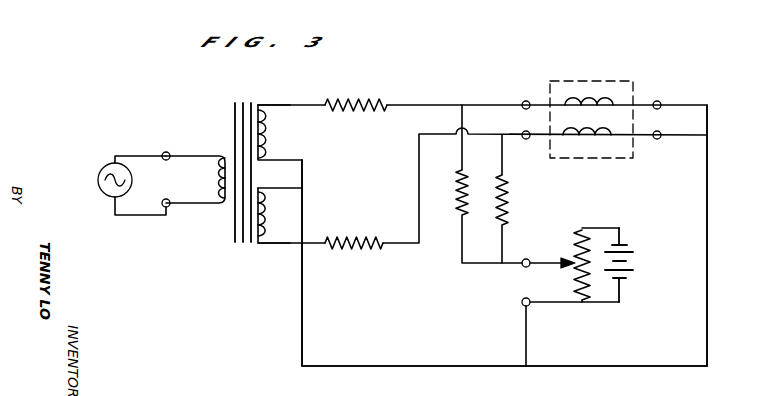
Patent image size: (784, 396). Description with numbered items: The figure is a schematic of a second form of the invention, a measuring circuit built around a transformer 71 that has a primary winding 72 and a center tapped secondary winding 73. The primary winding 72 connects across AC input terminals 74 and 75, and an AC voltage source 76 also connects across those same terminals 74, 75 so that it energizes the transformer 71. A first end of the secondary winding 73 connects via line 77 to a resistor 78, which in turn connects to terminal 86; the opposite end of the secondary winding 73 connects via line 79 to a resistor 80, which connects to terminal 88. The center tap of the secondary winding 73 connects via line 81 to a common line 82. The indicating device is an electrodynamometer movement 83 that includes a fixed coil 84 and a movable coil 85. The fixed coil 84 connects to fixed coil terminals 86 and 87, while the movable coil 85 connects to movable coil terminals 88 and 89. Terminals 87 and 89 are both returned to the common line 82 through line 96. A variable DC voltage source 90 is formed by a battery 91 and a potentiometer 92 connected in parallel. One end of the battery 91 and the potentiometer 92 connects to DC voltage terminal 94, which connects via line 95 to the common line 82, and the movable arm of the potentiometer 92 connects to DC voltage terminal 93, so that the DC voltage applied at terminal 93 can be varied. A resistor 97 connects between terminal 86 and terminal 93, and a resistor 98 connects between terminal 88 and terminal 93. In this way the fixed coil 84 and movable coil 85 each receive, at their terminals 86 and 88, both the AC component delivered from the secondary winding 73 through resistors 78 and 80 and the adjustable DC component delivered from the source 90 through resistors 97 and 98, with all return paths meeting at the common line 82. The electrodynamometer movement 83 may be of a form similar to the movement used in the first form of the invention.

The transformer 71 is at (234, 104).
The primary winding 72 is at (225, 150).
The center tapped secondary winding 73 is at (264, 104).
The AC input terminal 74 is at (163, 152).
The AC input terminal 75 is at (169, 208).
The AC voltage source 76 is at (98, 172).
The line 77 is at (296, 108).
The resistor 78 is at (366, 99).
The line 79 is at (289, 245).
The resistor 80 is at (354, 240).
The line 81 is at (303, 321).
The common line 82 is at (415, 364).
The electrodynamometer movement 83 is at (628, 78).
The fixed coil 84 is at (581, 98).
The movable coil 85 is at (596, 142).
The fixed coil terminal 86 is at (527, 100).
The fixed coil terminal 87 is at (660, 101).
The movable coil terminal 88 is at (525, 130).
The movable coil terminal 89 is at (657, 139).
The variable DC voltage source 90 is at (618, 206).
The battery 91 is at (630, 247).
The potentiometer 92 is at (574, 249).
The DC voltage terminal 93 is at (527, 268).
The DC voltage terminal 94 is at (525, 307).
The line 95 is at (528, 348).
The line 96 is at (708, 346).
The resistor 97 is at (456, 175).
The resistor 98 is at (508, 182).